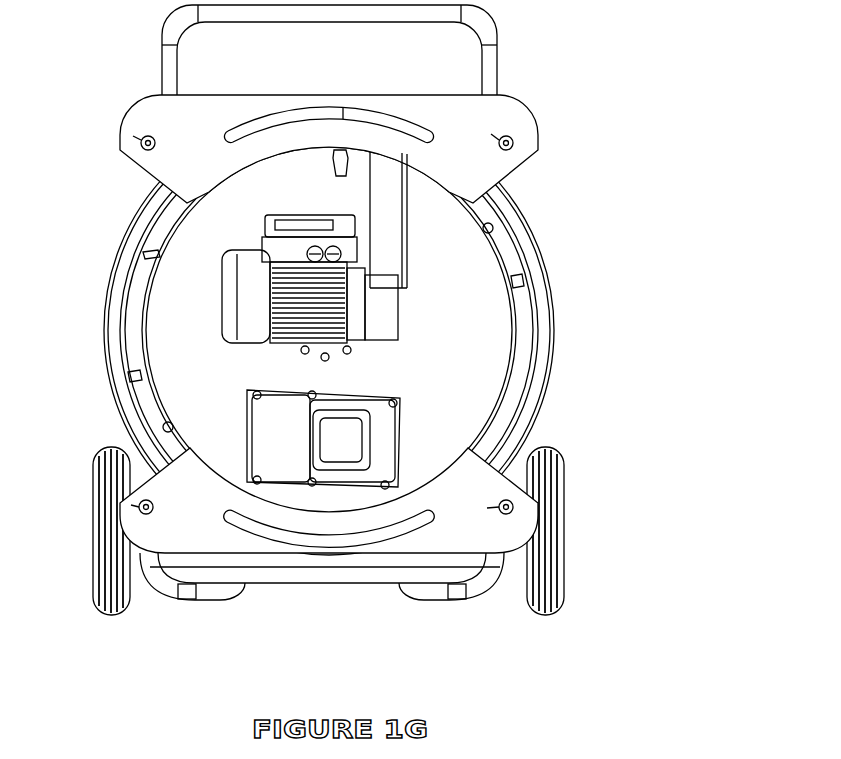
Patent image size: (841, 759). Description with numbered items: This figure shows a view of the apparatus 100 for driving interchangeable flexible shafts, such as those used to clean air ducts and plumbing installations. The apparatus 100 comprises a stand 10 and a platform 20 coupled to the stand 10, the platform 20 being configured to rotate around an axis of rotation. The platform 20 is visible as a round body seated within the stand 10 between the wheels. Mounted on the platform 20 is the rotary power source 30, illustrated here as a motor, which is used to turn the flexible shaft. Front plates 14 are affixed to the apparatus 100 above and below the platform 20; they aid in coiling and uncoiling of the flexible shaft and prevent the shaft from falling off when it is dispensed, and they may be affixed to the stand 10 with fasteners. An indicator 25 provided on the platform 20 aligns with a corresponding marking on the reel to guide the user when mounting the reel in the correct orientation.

The stand 10 is at (176, 28).
The front plates 14 is at (469, 165).
The platform 20 is at (453, 348).
The indicator 25 is at (333, 170).
The rotary power source 30 is at (234, 302).
The apparatus 100 is at (384, 310).